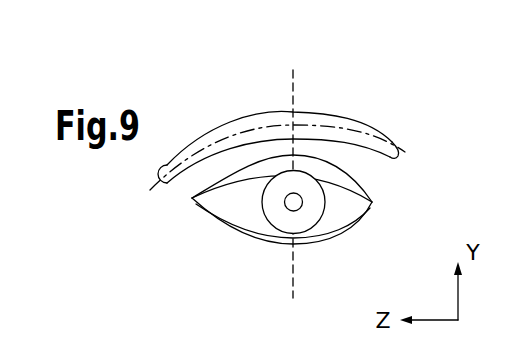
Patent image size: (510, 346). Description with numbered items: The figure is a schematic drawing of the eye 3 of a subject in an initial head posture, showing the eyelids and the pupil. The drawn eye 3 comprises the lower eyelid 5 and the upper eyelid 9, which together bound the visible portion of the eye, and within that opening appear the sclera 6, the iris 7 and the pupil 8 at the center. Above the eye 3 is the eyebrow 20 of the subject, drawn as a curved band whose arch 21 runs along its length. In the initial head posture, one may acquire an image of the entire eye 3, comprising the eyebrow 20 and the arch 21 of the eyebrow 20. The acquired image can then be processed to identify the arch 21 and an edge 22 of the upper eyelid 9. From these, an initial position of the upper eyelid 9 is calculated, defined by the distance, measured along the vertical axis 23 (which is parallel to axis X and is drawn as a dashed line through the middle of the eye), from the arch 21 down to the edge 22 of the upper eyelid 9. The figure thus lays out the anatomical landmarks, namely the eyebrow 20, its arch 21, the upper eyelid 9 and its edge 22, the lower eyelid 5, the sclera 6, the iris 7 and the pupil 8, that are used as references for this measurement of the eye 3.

The eye 3 is at (240, 104).
The lower eyelid 5 is at (313, 246).
The sclera 6 is at (233, 211).
The iris 7 is at (322, 212).
The pupil 8 is at (286, 207).
The upper eyelid 9 is at (347, 180).
The eyebrow 20 is at (336, 112).
The arch 21 is at (373, 133).
The edge 22 is at (212, 191).
The vertical axis 23 is at (293, 80).